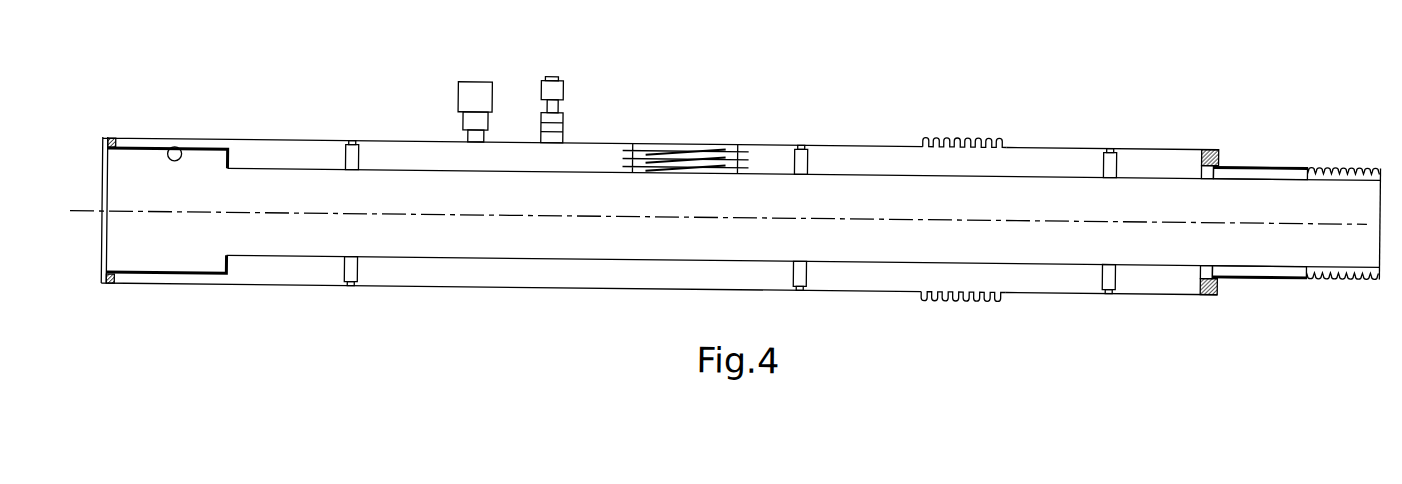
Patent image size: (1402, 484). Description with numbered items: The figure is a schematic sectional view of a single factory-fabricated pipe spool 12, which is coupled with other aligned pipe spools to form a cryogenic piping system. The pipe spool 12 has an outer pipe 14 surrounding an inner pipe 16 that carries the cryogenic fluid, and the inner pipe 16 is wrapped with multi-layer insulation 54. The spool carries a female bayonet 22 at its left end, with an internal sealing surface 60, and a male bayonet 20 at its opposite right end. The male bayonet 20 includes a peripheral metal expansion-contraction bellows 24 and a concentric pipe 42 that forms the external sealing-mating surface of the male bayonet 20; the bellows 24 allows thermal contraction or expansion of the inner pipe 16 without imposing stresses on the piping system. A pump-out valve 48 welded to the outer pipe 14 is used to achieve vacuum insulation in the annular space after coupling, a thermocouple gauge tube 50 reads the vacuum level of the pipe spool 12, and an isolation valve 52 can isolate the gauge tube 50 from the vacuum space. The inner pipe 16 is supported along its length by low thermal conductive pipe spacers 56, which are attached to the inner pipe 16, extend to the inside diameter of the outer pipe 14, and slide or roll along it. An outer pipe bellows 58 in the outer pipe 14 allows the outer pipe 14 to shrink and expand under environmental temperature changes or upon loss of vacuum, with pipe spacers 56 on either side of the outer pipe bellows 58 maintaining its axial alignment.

The pipe spool 12 is at (597, 315).
The outer pipe 14 is at (1018, 138).
The inner pipe 16 is at (882, 167).
The male bayonet 20 is at (1355, 254).
The female bayonet 22 is at (141, 138).
The expansion-contraction bellows 24 is at (1350, 157).
The concentric pipe 42 is at (1247, 155).
The pump-out valve 48 is at (473, 78).
The thermocouple gauge tube 50 is at (552, 72).
The isolation valve 52 is at (562, 118).
The insulation 54 is at (665, 145).
The pipe spacers 56 is at (351, 138).
The outer pipe bellows 58 is at (963, 136).
The internal sealing surface 60 is at (170, 147).